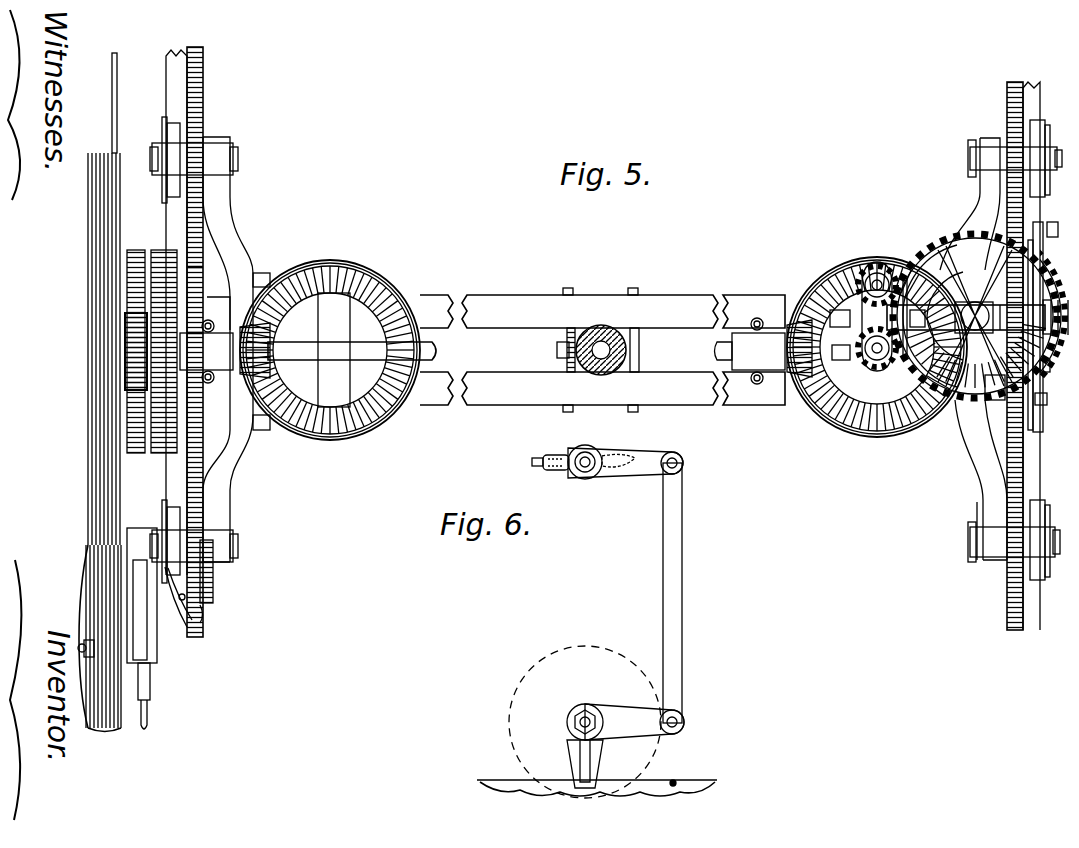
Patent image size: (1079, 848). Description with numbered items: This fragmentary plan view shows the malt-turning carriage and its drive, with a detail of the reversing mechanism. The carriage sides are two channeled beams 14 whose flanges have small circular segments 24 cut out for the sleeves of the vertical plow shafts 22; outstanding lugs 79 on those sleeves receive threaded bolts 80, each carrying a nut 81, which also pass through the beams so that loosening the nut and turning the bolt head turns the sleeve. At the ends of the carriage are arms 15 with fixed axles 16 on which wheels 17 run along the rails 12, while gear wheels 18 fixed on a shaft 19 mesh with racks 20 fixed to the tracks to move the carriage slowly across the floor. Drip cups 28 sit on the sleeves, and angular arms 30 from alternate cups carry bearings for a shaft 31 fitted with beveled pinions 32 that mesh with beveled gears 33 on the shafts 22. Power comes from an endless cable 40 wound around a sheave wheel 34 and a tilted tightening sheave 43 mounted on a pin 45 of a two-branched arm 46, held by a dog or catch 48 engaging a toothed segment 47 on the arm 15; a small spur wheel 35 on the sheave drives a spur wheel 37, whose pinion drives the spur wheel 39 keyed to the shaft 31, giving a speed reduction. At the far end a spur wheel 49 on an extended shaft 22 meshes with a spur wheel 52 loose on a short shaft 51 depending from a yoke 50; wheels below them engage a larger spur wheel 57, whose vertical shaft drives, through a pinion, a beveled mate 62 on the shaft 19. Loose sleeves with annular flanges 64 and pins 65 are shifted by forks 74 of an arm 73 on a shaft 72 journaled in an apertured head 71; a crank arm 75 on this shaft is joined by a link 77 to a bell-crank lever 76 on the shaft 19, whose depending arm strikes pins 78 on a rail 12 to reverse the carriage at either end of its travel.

In FIG. 5, the rails 12 is at (175, 66).
In FIG. 6, the rails 12 is at (478, 781).
In FIG. 5, the channeled beams 14 is at (496, 302).
In FIG. 5, the carriage arms 15 is at (244, 242).
In FIG. 5, the fixed axles 16 is at (205, 152).
In FIG. 5, the wheels 17 is at (163, 125).
In FIG. 5, the gear wheels 18 is at (262, 272).
In FIG. 5, the shaft 19 is at (1052, 332).
In FIG. 6, the shaft 19 is at (583, 714).
In FIG. 5, the racks 20 is at (204, 76).
In FIG. 5, the vertically-disposed shafts 22 is at (913, 396).
In FIG. 5, the circular segments 24 is at (603, 325).
In FIG. 5, the drip cups 28 is at (400, 402).
In FIG. 5, the angular arm 30 is at (482, 351).
In FIG. 5, the shaft 31 is at (430, 340).
In FIG. 5, the beveled pinions 32 is at (262, 338).
In FIG. 5, the beveled gears 33 is at (375, 415).
In FIG. 5, the sheave wheel 34 is at (88, 263).
In FIG. 5, the small spur wheel 35 is at (135, 350).
In FIG. 5, the spur wheel 37 is at (130, 437).
In FIG. 5, the spur wheel 39 is at (155, 285).
In FIG. 5, the endless driven cable 40 is at (111, 106).
In FIG. 5, the tightening sheave 43 is at (92, 728).
In FIG. 5, the pin 45 is at (81, 640).
In FIG. 5, the arm 46 is at (151, 700).
In FIG. 5, the toothed segment 47 is at (215, 584).
In FIG. 5, the dog or catch 48 is at (202, 612).
In FIG. 5, the spur wheel 49 is at (873, 372).
In FIG. 5, the yoke 50 is at (790, 392).
In FIG. 5, the short shaft 51 is at (870, 268).
In FIG. 5, the spur wheel 52 is at (860, 268).
In FIG. 5, the larger spur wheel 57 is at (932, 256).
In FIG. 5, the beveled mate 62 is at (998, 400).
In FIG. 5, the annular flanges 64 is at (822, 281).
In FIG. 5, the pins 65 is at (818, 400).
In FIG. 5, the apertured head 71 is at (977, 317).
In FIG. 5, the shaft 72 is at (1050, 364).
In FIG. 6, the shaft 72 is at (586, 472).
In FIG. 5, the arm 73 is at (938, 286).
In FIG. 6, the arm 73 is at (561, 472).
In FIG. 5, the forks 74 is at (940, 350).
In FIG. 6, the forks 74 is at (538, 468).
In FIG. 5, the crank arm 75 is at (1036, 284).
In FIG. 6, the crank arm 75 is at (648, 472).
In FIG. 5, the bell-crank lever 76 is at (1052, 238).
In FIG. 6, the bell-crank lever 76 is at (577, 746).
In FIG. 5, the link 77 is at (1040, 224).
In FIG. 6, the pins 78 is at (680, 780).
In FIG. 5, the outstanding lugs 79 is at (556, 352).
In FIG. 5, the bolts 80 is at (566, 340).
In FIG. 5, the nut 81 is at (566, 288).